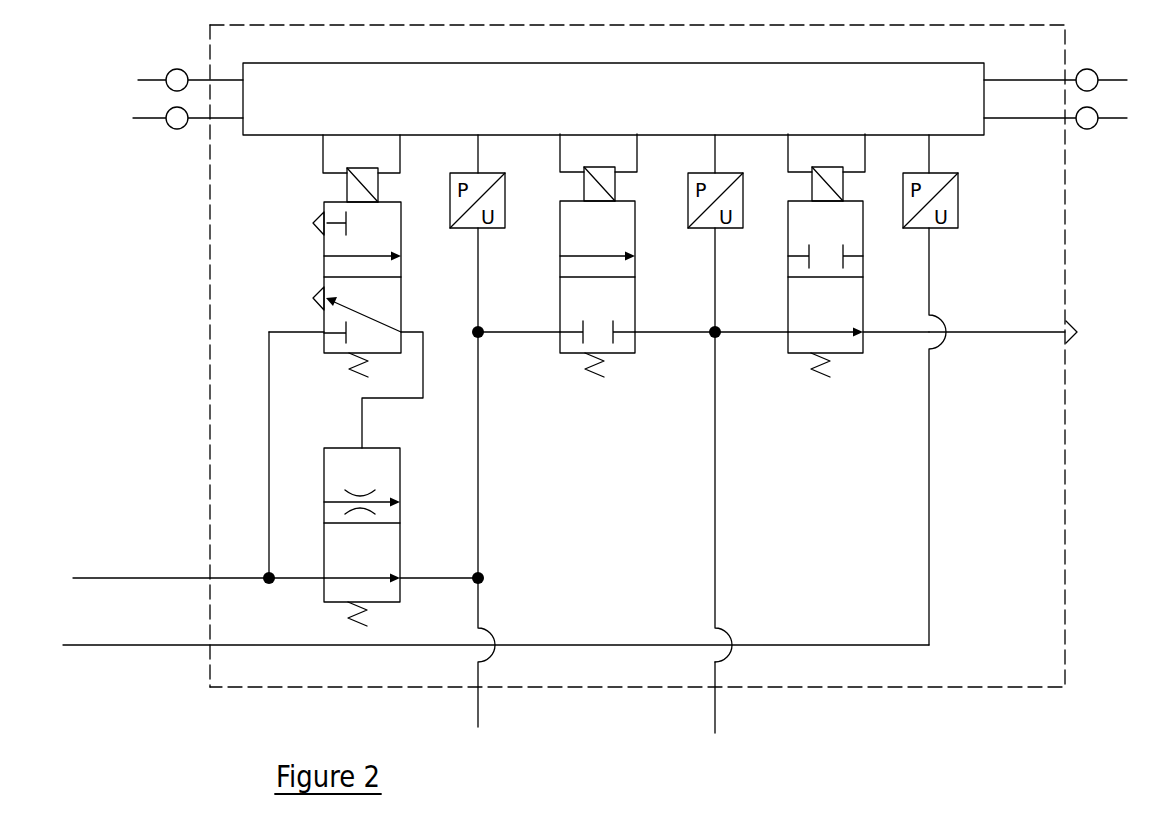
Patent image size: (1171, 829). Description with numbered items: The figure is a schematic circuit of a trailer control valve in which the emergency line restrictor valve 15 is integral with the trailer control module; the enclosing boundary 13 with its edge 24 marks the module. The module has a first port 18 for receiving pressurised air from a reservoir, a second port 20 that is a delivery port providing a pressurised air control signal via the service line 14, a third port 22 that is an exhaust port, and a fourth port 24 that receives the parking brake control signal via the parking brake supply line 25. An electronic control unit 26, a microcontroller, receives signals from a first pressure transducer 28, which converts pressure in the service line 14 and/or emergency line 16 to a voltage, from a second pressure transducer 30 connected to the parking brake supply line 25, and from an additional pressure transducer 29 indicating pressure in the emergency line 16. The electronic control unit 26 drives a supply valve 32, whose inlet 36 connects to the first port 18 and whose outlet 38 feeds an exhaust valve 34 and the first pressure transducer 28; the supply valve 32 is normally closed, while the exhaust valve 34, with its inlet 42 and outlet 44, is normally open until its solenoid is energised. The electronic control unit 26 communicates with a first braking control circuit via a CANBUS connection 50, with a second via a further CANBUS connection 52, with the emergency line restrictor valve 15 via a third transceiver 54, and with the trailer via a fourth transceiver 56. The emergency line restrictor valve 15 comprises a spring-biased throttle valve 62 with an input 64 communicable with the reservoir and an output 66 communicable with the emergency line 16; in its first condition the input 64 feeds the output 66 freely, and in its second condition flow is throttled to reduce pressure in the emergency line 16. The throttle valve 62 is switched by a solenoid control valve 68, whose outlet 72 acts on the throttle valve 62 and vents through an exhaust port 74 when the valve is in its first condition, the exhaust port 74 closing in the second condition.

The control unit housing 13 is at (875, 415).
The service line 14 is at (718, 705).
The emergency line restrictor valve 15 is at (256, 313).
The emergency line 16 is at (480, 705).
The first port 18 is at (210, 578).
The second port 20 is at (718, 717).
The third port 22 is at (1070, 340).
The fourth port 24 is at (210, 648).
The parking brake supply line 25 is at (316, 647).
The electronic control unit 26 is at (613, 99).
The first pressure transducer 28 is at (703, 228).
The additional pressure transducer 29 is at (450, 186).
The second pressure transducer 30 is at (957, 200).
The supply valve 32 is at (639, 314).
The exhaust valve 34 is at (868, 290).
The inlet 36 is at (560, 333).
The outlet 38 is at (614, 334).
The inlet 42 is at (788, 333).
The outlet 44 is at (865, 334).
The CANBUS connection 50 is at (169, 70).
The further CANBUS connection 52 is at (172, 129).
The third transceiver 54 is at (1090, 130).
The fourth transceiver 56 is at (1093, 70).
The throttle valve 62 is at (406, 474).
The input 64 is at (324, 580).
The output 66 is at (402, 580).
The control valve 68 is at (324, 202).
The outlet 72 is at (401, 332).
The exhaust port 74 is at (320, 298).